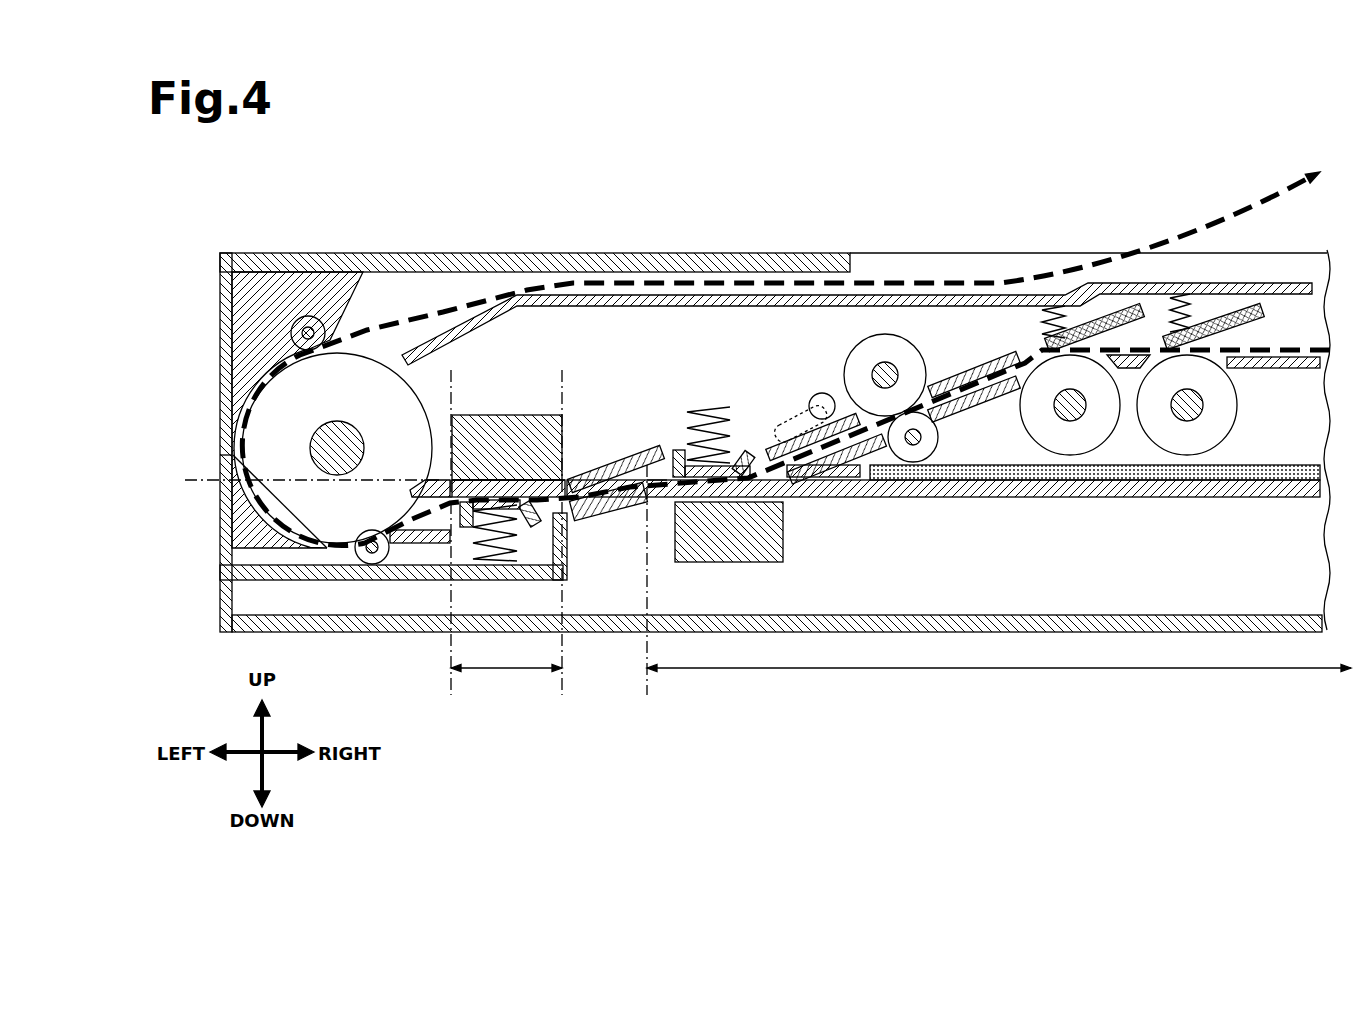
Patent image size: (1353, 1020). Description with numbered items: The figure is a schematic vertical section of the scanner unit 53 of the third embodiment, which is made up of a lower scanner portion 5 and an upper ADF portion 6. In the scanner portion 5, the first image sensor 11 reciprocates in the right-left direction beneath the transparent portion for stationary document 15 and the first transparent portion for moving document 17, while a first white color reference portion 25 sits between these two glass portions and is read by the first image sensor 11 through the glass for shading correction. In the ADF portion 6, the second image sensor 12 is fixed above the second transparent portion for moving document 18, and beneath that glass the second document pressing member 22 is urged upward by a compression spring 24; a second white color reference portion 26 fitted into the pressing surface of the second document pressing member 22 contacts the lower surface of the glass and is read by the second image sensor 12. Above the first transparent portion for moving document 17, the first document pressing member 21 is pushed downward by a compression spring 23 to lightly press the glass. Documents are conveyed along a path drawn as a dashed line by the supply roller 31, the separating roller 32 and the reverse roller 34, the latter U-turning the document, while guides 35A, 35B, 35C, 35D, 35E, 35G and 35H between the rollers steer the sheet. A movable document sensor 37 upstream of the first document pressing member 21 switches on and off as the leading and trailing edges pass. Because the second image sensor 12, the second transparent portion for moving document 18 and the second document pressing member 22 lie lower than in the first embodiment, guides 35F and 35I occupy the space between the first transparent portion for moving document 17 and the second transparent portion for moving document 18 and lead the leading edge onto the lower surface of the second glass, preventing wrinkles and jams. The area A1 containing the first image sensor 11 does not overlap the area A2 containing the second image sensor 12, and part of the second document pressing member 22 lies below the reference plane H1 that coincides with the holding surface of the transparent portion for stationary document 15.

The scanner unit 53 is at (279, 199).
The ADF portion 6 is at (319, 252).
The scanner portion 5 is at (318, 633).
The reverse roller 34 is at (352, 344).
The guide 35G is at (436, 483).
The second transparent portion for moving document 18 is at (448, 480).
The second white color reference portion 26 is at (500, 480).
The second image sensor 12 is at (545, 415).
The compression spring 24 is at (468, 527).
The second document pressing member 22 is at (531, 526).
The guide 35H is at (413, 544).
The guide 35F is at (619, 460).
The guide 35I is at (604, 512).
The transparent portion for stationary document 15 is at (1038, 497).
The first transparent portion for moving document 17 is at (667, 492).
The first image sensor 11 is at (790, 544).
The compression spring 23 is at (690, 420).
The first document pressing member 21 is at (744, 452).
The guide 35D is at (768, 452).
The document sensor 37 is at (812, 397).
The guide 35E is at (856, 470).
The first white color reference portion 25 is at (823, 480).
The guide 35B is at (960, 373).
The guide 35C is at (957, 411).
The separating roller 32 is at (1021, 418).
The supply roller 31 is at (1238, 406).
The guide 35A is at (1128, 370).
The reference plane H1 is at (295, 478).
The area A1 is at (999, 580).
The area A2 is at (506, 533).